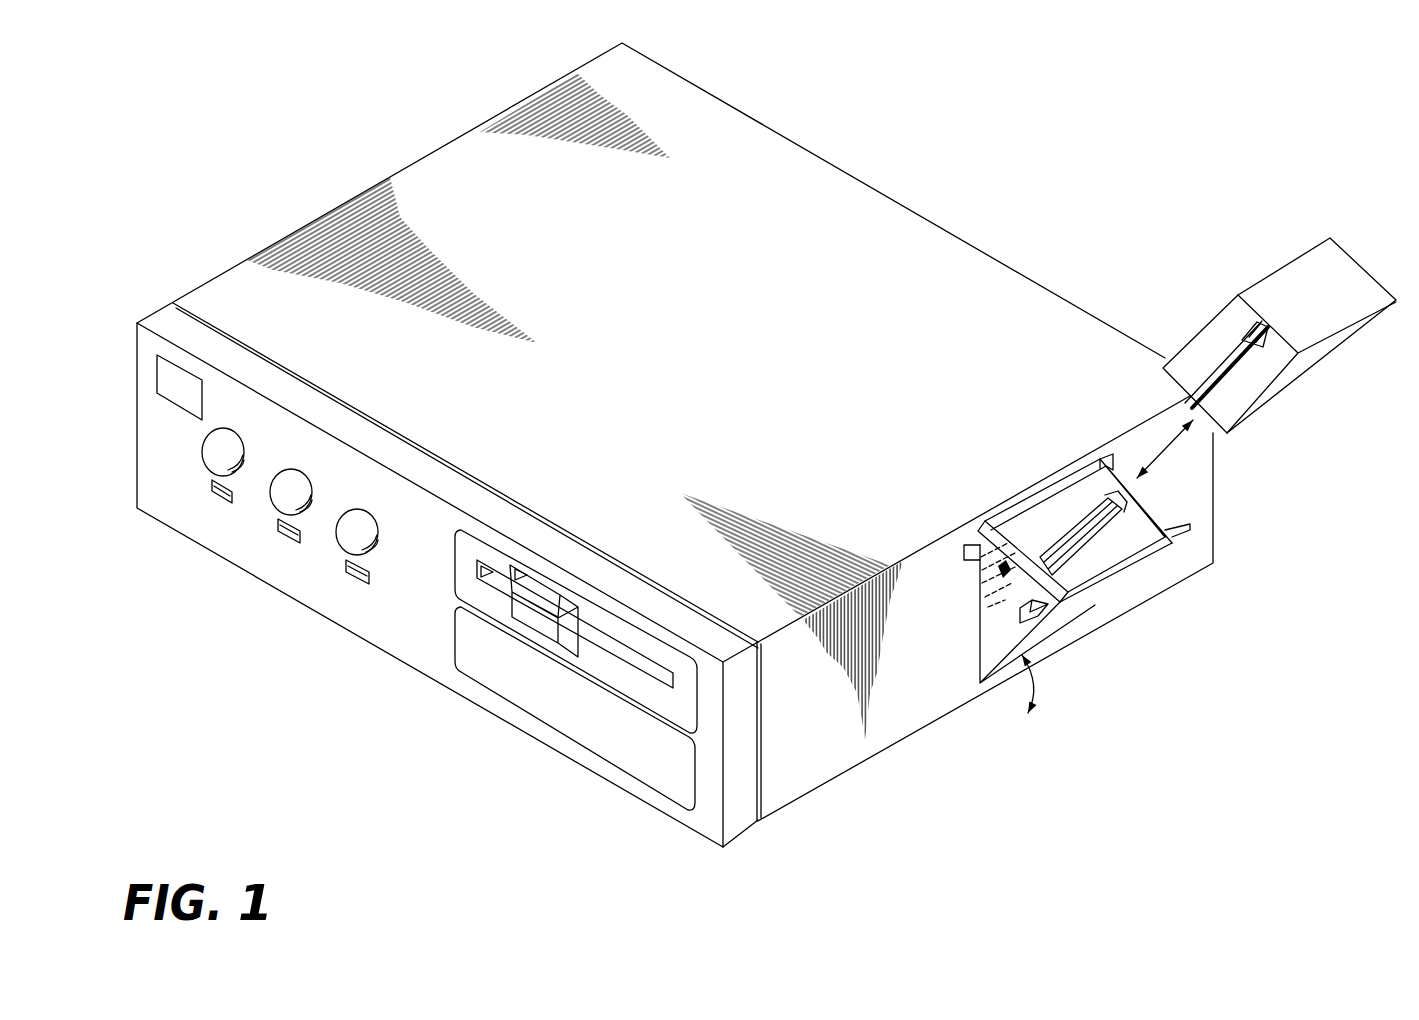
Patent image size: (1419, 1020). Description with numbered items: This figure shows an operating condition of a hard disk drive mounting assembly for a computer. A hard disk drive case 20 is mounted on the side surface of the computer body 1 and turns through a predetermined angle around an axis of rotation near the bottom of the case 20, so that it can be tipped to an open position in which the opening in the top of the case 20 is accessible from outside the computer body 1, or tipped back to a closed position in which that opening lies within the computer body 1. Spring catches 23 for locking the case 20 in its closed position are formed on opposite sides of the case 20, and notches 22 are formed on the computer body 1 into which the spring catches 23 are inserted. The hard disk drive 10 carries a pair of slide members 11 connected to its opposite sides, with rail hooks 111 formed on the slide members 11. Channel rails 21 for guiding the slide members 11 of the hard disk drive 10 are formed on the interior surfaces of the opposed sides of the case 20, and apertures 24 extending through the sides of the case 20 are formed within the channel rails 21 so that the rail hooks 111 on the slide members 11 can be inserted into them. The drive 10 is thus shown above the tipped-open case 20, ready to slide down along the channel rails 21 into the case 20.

The computer body 1 is at (818, 177).
The hard disk drive 10 is at (1318, 369).
The slide member 11 is at (1266, 326).
The rail hook 111 is at (1238, 341).
The hard disk drive case 20 is at (1102, 535).
The channel rail 21 is at (1090, 603).
The notch 22 is at (968, 550).
The spring catch 23 is at (1027, 618).
The aperture 24 is at (982, 588).